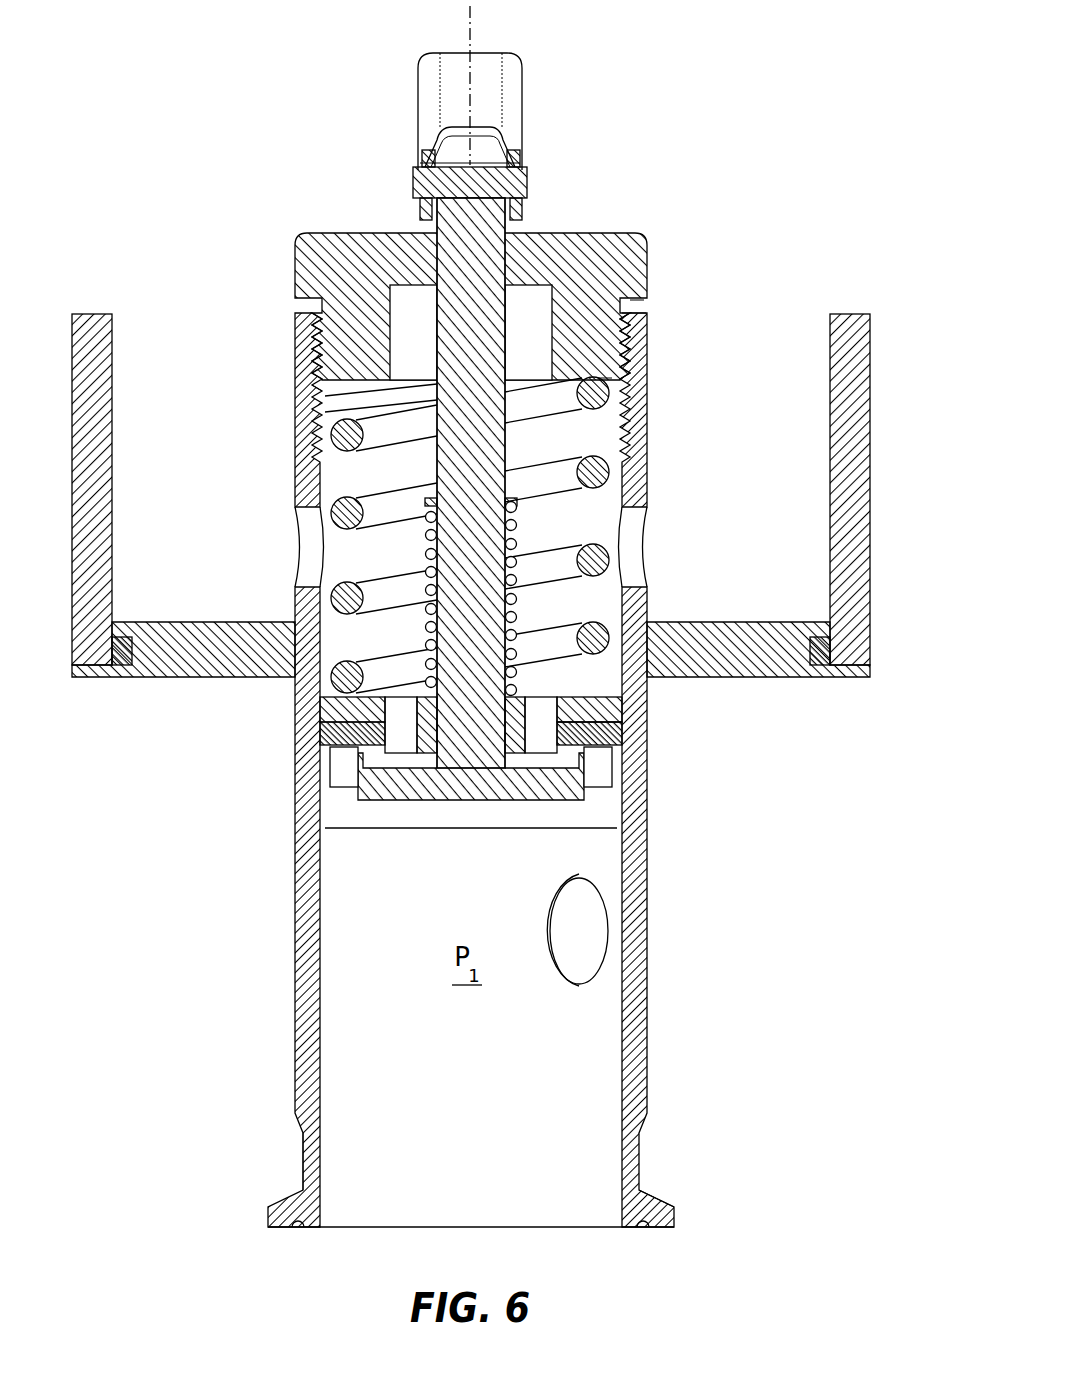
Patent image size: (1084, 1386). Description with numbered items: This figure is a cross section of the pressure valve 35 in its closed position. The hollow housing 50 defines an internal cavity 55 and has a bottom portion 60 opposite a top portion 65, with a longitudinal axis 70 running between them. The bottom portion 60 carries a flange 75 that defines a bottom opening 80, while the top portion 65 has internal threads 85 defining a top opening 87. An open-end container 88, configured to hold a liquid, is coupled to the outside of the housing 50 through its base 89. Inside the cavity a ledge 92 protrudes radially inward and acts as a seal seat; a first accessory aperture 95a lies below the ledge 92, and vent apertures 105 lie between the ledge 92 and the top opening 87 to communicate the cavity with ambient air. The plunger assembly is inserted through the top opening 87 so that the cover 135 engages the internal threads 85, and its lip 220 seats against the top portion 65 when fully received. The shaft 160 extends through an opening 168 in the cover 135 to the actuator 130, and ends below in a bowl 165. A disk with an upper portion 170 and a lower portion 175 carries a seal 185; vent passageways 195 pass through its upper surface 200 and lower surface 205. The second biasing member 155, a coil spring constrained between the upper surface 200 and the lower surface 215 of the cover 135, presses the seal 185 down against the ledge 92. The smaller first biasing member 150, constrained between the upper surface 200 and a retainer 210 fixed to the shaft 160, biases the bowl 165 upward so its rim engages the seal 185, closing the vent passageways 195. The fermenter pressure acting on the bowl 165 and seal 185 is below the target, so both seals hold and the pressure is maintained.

The pressure valve 35 is at (803, 205).
The housing 50 is at (648, 485).
The internal cavity 55 is at (572, 1188).
The bottom portion 60 is at (238, 1158).
The top portion 65 is at (168, 298).
The longitudinal axis 70 is at (473, 33).
The flange 75 is at (652, 1195).
The bottom opening 80 is at (362, 1228).
The internal threads 85 is at (604, 395).
The top opening 87 is at (640, 313).
The open-end container 88 is at (868, 420).
The base 89 is at (785, 678).
The ledge 92 is at (605, 738).
The first accessory aperture 95a is at (596, 892).
The vent apertures 105 is at (300, 548).
The actuator 130 is at (432, 86).
The cover 135 is at (600, 232).
The first biasing member 150 is at (424, 548).
The second biasing member 155 is at (333, 432).
The shaft 160 is at (512, 170).
The bowl 165 is at (400, 800).
The opening 168 is at (428, 265).
The upper portion 170 is at (322, 708).
The lower portion 175 is at (345, 768).
The seal 185 is at (615, 712).
The vent passageways 195 is at (402, 700).
The upper surface 200 is at (575, 740).
The lower surface 205 is at (590, 775).
The retainer 210 is at (518, 500).
The lower surface 215 is at (325, 395).
The lip 220 is at (642, 302).